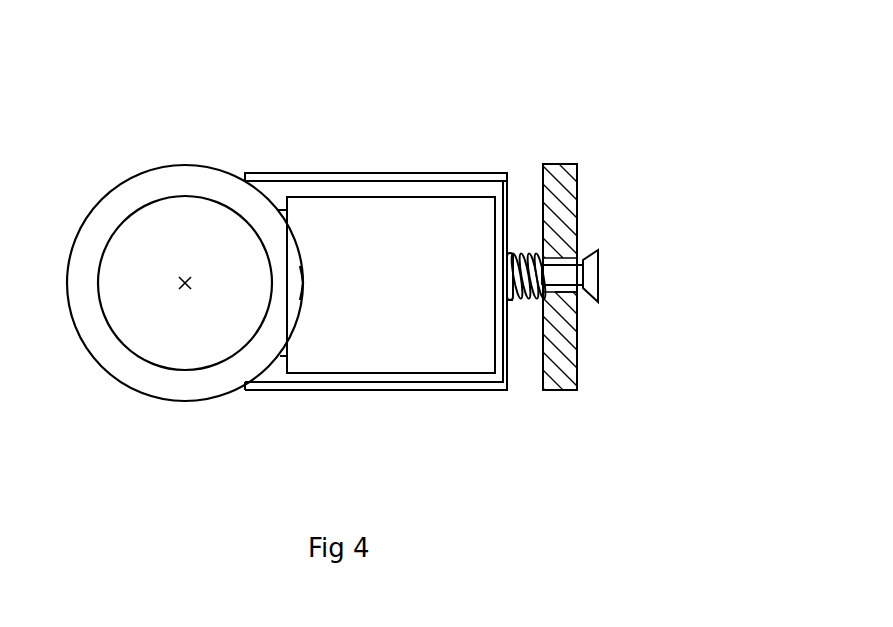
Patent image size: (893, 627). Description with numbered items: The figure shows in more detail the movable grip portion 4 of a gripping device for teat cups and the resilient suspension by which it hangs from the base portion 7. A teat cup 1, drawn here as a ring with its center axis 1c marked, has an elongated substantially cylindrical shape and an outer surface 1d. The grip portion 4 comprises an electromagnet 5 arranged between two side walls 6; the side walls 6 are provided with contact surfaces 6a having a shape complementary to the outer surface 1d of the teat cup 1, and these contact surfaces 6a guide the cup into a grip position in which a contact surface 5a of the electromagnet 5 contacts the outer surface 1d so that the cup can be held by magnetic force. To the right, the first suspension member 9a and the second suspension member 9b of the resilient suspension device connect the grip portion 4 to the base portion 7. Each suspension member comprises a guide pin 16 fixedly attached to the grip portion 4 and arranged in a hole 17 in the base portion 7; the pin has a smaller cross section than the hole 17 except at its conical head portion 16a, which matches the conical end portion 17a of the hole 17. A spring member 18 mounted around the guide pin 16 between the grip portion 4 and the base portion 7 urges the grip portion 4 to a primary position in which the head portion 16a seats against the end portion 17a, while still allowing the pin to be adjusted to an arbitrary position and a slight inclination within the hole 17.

The teat cup 1 is at (157, 223).
The center axis 1c is at (184, 290).
The outer surface 1d is at (305, 293).
The contact surface of the electromagnet 5a is at (305, 270).
The grip portion 4 is at (360, 172).
The side wall 6 is at (405, 172).
The contact surface 6a is at (262, 193).
The electromagnet 5 is at (415, 308).
The base portion 7 is at (558, 178).
The first suspension member 9a is at (511, 211).
The second suspension member 9b is at (526, 236).
The guide pin 16 is at (552, 273).
The head portion 16a is at (590, 268).
The hole 17 is at (560, 295).
The end portion 17a is at (565, 297).
The spring member 18 is at (527, 297).